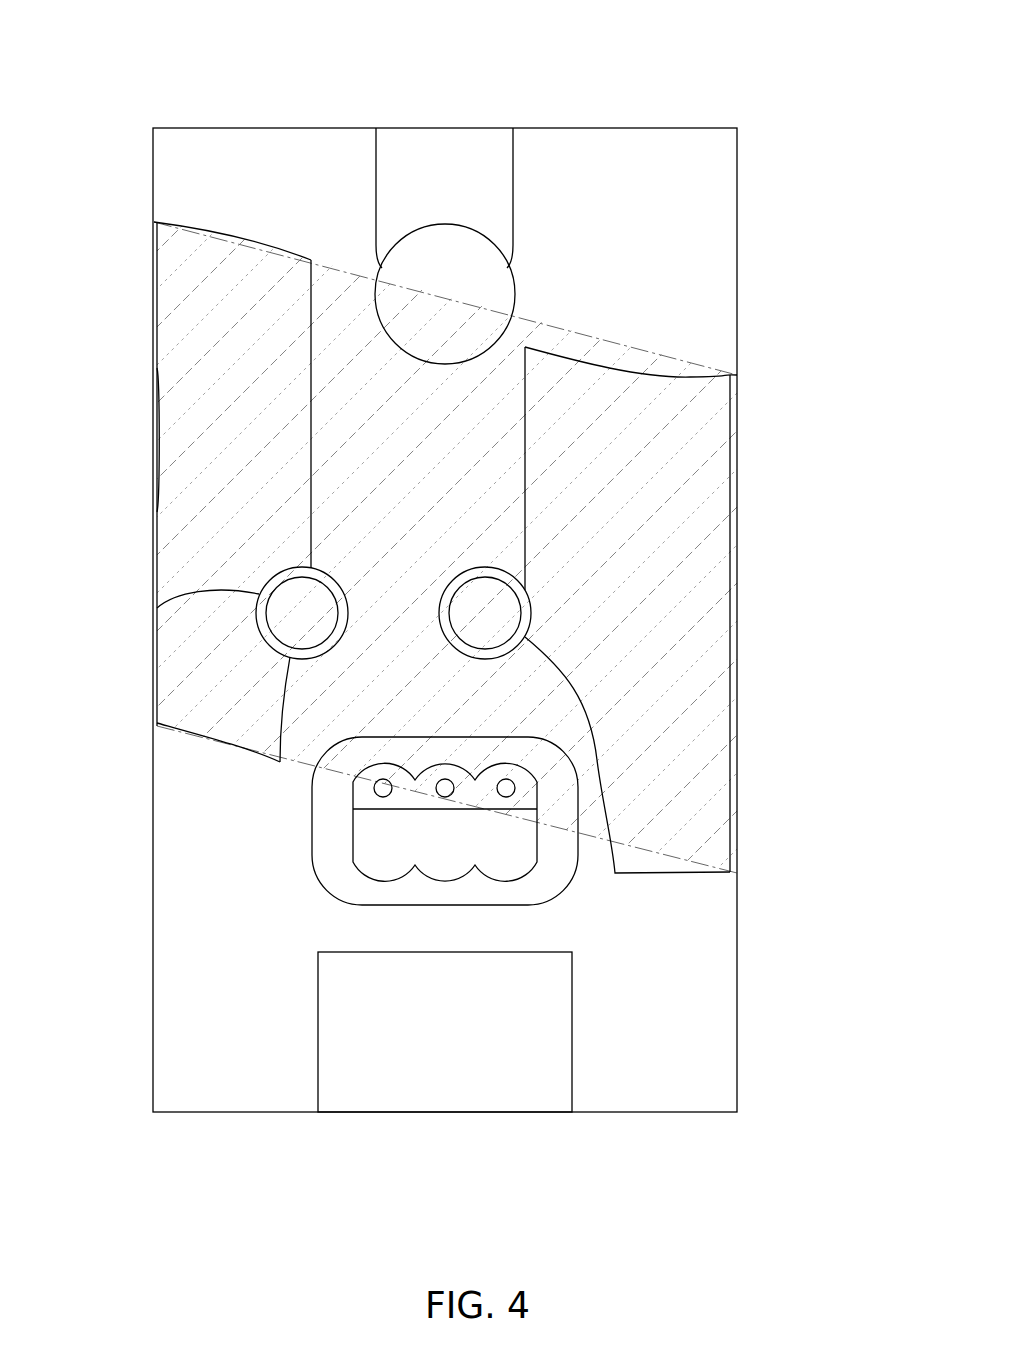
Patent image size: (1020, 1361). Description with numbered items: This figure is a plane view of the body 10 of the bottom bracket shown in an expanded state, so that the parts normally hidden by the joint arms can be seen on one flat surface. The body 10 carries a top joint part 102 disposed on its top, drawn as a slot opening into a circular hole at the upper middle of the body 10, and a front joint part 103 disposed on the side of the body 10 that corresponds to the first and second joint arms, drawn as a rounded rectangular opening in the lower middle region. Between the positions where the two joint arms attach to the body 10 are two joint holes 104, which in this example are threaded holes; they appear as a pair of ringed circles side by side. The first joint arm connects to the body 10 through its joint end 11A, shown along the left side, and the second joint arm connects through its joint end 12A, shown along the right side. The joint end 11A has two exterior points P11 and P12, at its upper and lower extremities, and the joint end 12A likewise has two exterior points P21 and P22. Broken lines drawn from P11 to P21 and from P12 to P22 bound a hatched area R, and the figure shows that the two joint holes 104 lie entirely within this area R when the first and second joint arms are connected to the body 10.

The body 10 is at (700, 207).
The top joint part 102 is at (448, 262).
The front joint part 103 is at (498, 858).
The joint holes 104 is at (156, 608).
The joint end 11A is at (157, 512).
The joint end 12A is at (737, 630).
The exterior point P11 is at (154, 222).
The exterior point P12 is at (157, 723).
The exterior point P21 is at (737, 375).
The exterior point P22 is at (737, 871).
The area R is at (700, 494).